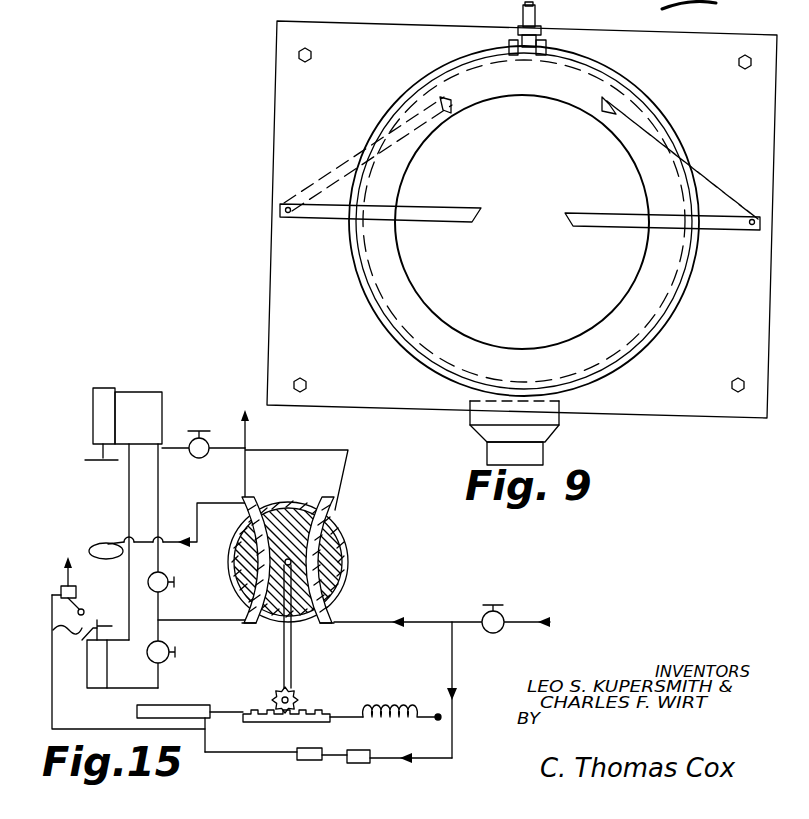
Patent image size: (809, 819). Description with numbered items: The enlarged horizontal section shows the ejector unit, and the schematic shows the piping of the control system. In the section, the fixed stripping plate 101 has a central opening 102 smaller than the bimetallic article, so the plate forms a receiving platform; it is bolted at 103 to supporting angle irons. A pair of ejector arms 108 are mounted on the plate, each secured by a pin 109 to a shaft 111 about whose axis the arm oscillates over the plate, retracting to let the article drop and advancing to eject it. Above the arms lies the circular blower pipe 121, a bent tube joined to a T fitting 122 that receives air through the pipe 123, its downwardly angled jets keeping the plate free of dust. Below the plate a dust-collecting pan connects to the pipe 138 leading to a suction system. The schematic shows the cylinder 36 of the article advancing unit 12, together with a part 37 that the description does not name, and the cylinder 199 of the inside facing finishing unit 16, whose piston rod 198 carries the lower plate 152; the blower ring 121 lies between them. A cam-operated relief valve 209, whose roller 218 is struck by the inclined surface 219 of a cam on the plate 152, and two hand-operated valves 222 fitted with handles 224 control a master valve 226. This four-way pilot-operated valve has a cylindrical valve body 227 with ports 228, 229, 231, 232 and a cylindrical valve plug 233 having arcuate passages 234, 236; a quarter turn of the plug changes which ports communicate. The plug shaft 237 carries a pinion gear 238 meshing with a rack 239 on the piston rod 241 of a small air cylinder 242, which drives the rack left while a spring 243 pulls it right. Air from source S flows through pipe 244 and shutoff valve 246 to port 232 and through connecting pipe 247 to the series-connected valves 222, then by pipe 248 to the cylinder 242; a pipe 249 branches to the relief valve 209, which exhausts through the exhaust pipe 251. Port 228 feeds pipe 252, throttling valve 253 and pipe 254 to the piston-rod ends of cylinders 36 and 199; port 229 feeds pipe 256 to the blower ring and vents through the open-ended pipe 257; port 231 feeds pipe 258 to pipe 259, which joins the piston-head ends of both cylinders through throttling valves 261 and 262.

In FIG. 9, the stripping plate 101 is at (277, 68).
In FIG. 9, the central opening 102 is at (460, 117).
In FIG. 9, the bolts 103 is at (739, 62).
In FIG. 9, the ejector arms 108 is at (565, 213).
In FIG. 9, the pin 109 is at (757, 232).
In FIG. 9, the shaft 111 is at (753, 216).
In FIG. 9, the blower pipe 121 is at (584, 378).
In FIG. 15, the blower pipe 121 is at (102, 545).
In FIG. 9, the T fitting 122 is at (546, 47).
In FIG. 9, the pipe 123 is at (523, 12).
In FIG. 9, the pipe 138 is at (535, 452).
In FIG. 15, the article advancing unit 12 is at (88, 434).
In FIG. 15, the inside facing finishing unit 16 is at (78, 673).
In FIG. 15, the cylinder 36 is at (93, 408).
In FIG. 15, the discharge stub 37 is at (100, 455).
In FIG. 15, the lower plate 152 is at (93, 629).
In FIG. 15, the piston rod 198 is at (82, 640).
In FIG. 15, the fluid-operated cylinder 199 is at (98, 692).
In FIG. 15, the cam-operated relief valve 209 is at (52, 596).
In FIG. 15, the roller 218 is at (84, 611).
In FIG. 15, the inclined surface 219 is at (53, 630).
In FIG. 15, the manually operated valves 222 is at (347, 750).
In FIG. 15, the handle 224 is at (308, 767).
In FIG. 15, the master valve 226 is at (360, 562).
In FIG. 15, the cylindrical valve body 227 is at (292, 503).
In FIG. 15, the port 228 is at (340, 503).
In FIG. 15, the port 229 is at (248, 498).
In FIG. 15, the port 231 is at (228, 620).
In FIG. 15, the port 232 is at (330, 624).
In FIG. 15, the cylindrical valve plug 233 is at (343, 588).
In FIG. 15, the arcuate passage 234 is at (252, 528).
In FIG. 15, the arcuate passage 236 is at (345, 540).
In FIG. 15, the shaft 237 is at (283, 668).
In FIG. 15, the pinion gear 238 is at (292, 690).
In FIG. 15, the rack 239 is at (310, 714).
In FIG. 15, the piston rod 241 is at (240, 710).
In FIG. 15, the small air cylinder 242 is at (150, 705).
In FIG. 15, the spring 243 is at (368, 712).
In FIG. 15, the pipe 244 is at (506, 622).
In FIG. 15, the shutoff valve 246 is at (485, 619).
In FIG. 15, the connecting pipe 247 is at (455, 670).
In FIG. 15, the pipe 248 is at (210, 750).
In FIG. 15, the pipe 249 is at (97, 735).
In FIG. 15, the exhaust pipe 251 is at (60, 572).
In FIG. 15, the pipe 252 is at (302, 450).
In FIG. 15, the throttling valve 253 is at (194, 444).
In FIG. 15, the pipe 254 is at (129, 496).
In FIG. 15, the pipe 256 is at (196, 530).
In FIG. 15, the pipe 257 is at (244, 419).
In FIG. 15, the pipe 258 is at (248, 624).
In FIG. 15, the pipe 259 is at (170, 650).
In FIG. 15, the throttling valve 261 is at (160, 572).
In FIG. 15, the throttling valve 262 is at (163, 658).